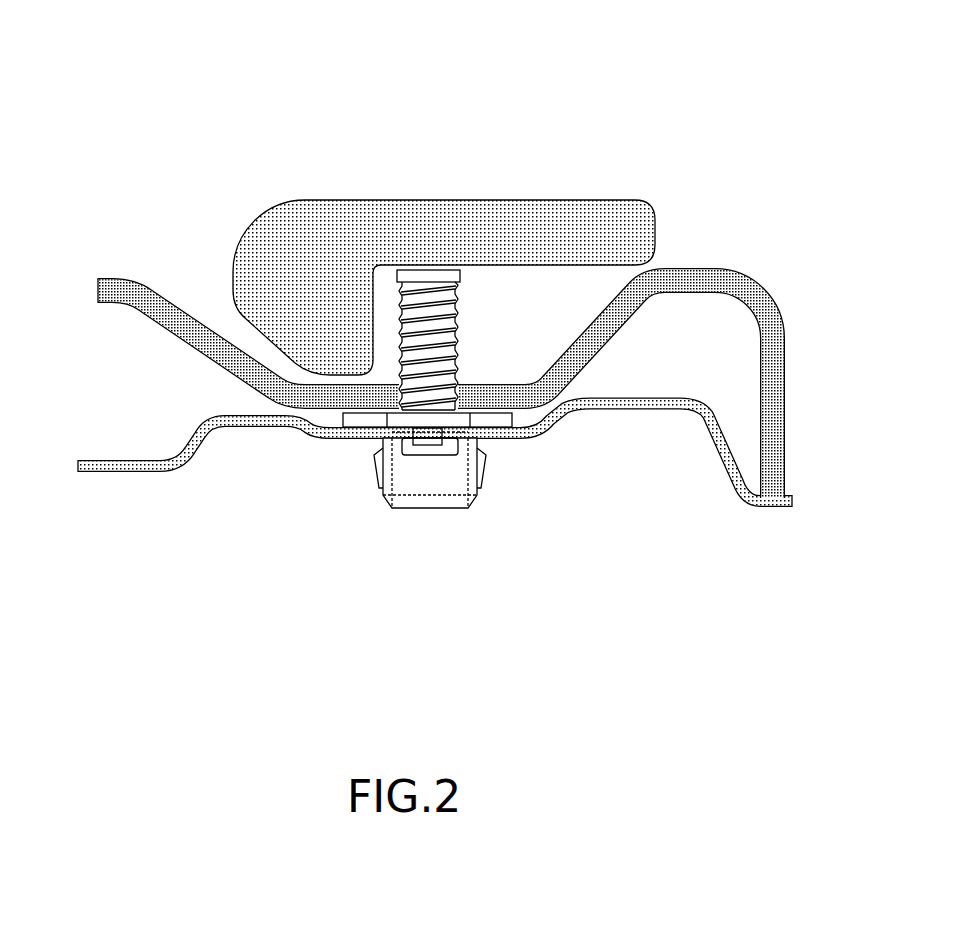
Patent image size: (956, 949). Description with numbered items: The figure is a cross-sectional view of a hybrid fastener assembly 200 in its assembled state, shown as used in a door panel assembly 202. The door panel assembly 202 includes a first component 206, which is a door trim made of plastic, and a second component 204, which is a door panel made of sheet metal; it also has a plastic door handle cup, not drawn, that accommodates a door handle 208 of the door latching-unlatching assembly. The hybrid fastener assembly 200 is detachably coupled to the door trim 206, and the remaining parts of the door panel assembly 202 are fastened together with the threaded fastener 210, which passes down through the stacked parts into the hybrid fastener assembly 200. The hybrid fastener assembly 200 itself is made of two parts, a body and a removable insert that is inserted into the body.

The hybrid fastener assembly 200 is at (432, 532).
The door panel assembly 202 is at (573, 110).
The second component 204 is at (773, 402).
The first component 206 is at (162, 470).
The door handle 208 is at (315, 252).
The threaded fastener 210 is at (430, 288).